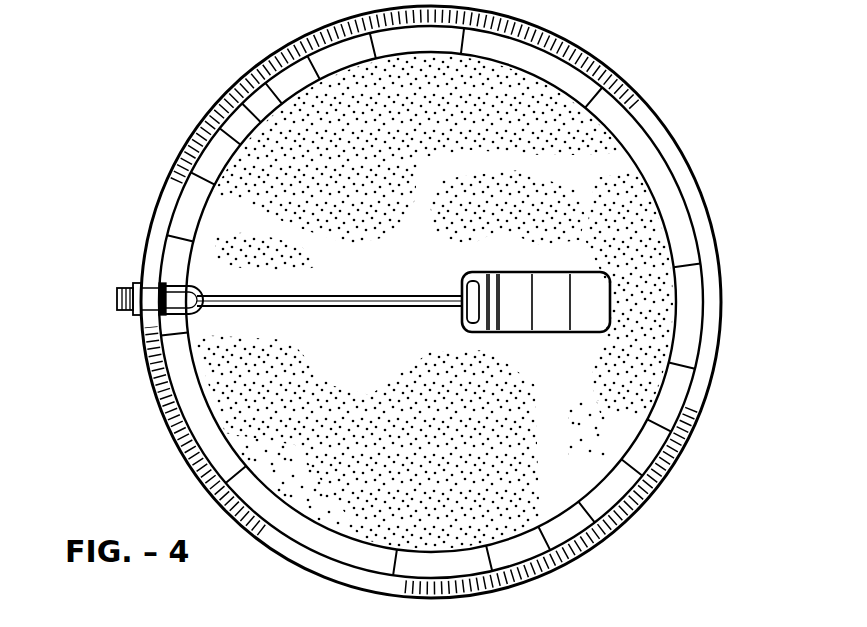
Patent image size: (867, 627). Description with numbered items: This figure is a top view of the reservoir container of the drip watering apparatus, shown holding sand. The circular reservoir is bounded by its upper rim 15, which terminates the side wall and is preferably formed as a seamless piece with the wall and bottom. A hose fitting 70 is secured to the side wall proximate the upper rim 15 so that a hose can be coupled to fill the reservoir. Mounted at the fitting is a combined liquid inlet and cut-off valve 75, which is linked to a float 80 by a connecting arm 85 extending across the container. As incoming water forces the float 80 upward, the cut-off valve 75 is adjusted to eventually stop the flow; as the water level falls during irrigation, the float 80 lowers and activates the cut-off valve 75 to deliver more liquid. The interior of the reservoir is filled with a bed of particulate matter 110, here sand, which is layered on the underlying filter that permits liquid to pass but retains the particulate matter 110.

The upper rim 15 is at (673, 152).
The hose fitting 70 is at (125, 286).
The cut-off valve 75 is at (165, 318).
The float 80 is at (463, 316).
The connecting arm 85 is at (357, 308).
The particulate matter 110 is at (602, 407).